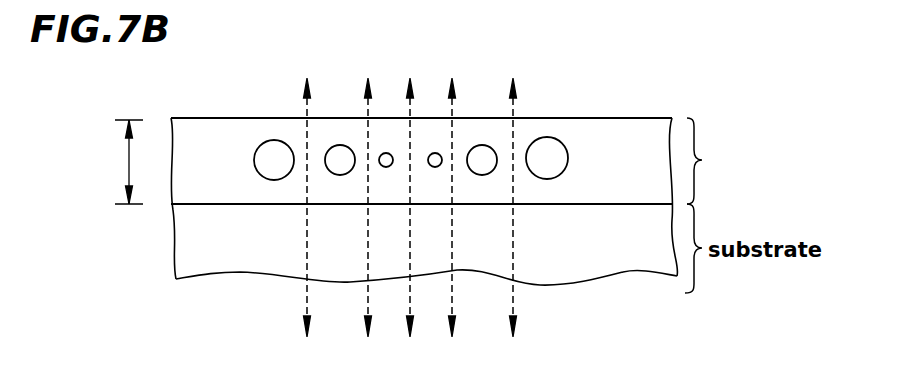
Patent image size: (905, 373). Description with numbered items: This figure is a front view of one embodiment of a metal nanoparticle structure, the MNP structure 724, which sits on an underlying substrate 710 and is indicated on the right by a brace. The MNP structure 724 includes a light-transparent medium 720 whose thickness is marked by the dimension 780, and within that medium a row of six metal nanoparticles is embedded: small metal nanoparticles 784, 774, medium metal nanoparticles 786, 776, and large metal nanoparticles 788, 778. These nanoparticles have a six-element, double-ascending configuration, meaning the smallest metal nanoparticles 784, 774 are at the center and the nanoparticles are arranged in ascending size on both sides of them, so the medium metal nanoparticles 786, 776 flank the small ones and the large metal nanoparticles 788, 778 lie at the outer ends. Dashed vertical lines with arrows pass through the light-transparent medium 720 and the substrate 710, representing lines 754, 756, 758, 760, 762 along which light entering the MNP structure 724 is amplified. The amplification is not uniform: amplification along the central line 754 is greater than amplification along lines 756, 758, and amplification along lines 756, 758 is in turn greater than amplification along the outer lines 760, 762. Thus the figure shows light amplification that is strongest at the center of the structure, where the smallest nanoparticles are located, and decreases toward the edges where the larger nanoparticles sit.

The substrate 710 is at (182, 248).
The light-transparent medium 720 is at (185, 188).
The MNP structure 724 is at (754, 161).
The line 754 is at (410, 298).
The line 756 is at (370, 300).
The line 758 is at (452, 300).
The line 760 is at (303, 288).
The line 762 is at (515, 298).
The small metal nanoparticle 774 is at (436, 153).
The medium metal nanoparticle 776 is at (482, 157).
The large metal nanoparticle 778 is at (552, 157).
The layer thickness 780 is at (128, 161).
The small metal nanoparticle 784 is at (386, 153).
The medium metal nanoparticle 786 is at (341, 155).
The large metal nanoparticle 788 is at (258, 163).